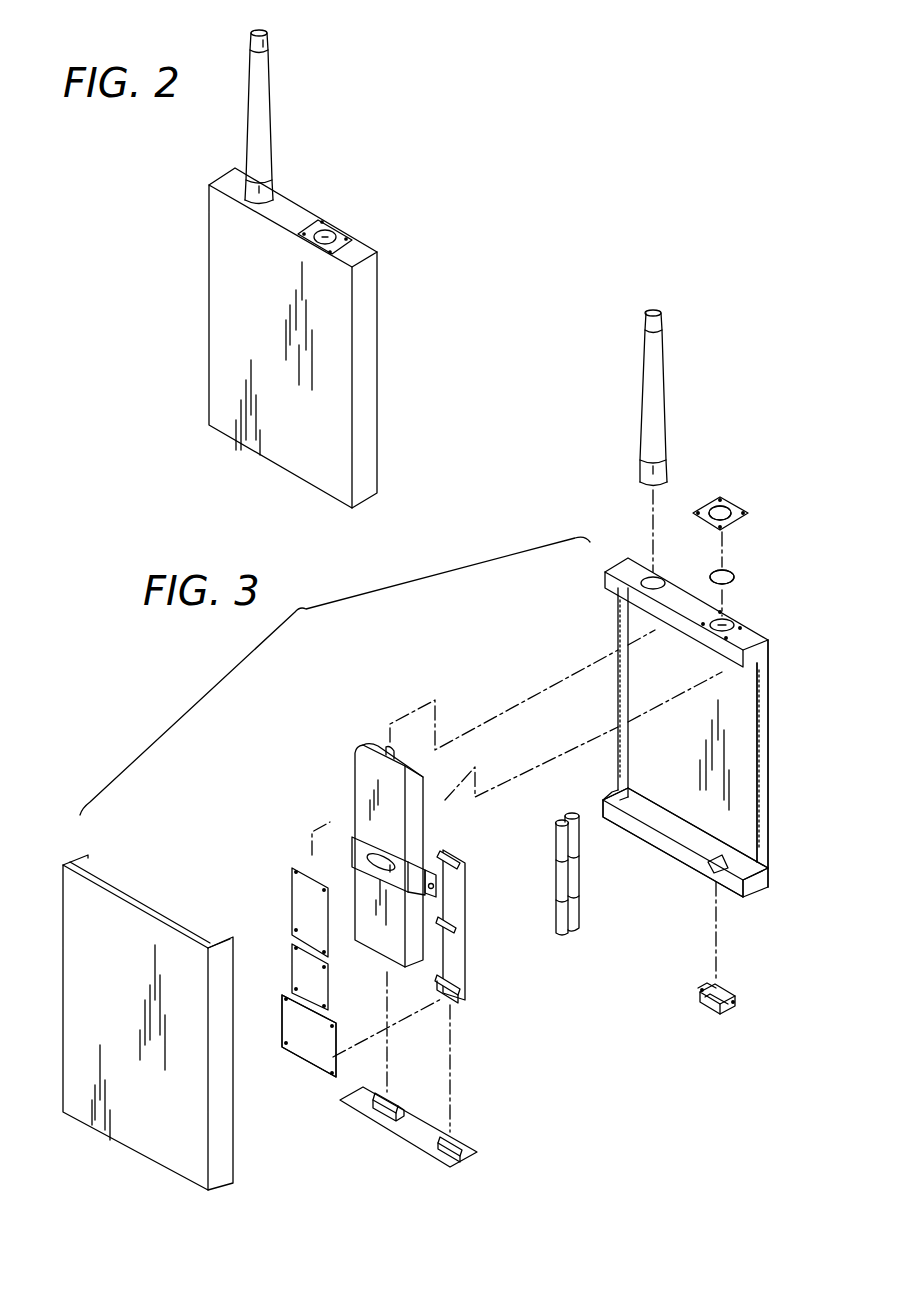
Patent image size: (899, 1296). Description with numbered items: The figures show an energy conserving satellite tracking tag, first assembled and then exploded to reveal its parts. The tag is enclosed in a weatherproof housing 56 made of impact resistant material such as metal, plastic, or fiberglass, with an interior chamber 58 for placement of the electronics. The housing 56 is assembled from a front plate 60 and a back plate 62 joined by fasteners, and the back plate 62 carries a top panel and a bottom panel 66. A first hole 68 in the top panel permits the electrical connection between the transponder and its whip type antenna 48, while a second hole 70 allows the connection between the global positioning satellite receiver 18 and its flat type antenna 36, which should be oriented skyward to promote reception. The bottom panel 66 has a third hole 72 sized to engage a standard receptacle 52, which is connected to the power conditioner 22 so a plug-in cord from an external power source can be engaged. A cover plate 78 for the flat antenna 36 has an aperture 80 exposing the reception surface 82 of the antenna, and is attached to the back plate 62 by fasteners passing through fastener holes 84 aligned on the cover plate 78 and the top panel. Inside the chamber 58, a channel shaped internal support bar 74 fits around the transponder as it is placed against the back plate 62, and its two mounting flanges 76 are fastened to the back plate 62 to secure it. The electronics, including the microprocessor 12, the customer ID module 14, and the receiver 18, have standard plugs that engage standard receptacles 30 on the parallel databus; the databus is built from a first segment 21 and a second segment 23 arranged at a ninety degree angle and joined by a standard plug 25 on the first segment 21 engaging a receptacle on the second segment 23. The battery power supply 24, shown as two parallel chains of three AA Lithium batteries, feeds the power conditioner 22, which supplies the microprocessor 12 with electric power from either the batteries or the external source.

In FIG. 3, the microprocessor 12 is at (300, 1063).
In FIG. 3, the customer ID module 14 is at (293, 969).
In FIG. 3, the global positioning satellite (GPS) receiver 18 is at (292, 894).
In FIG. 3, the first segment 21 is at (410, 1155).
In FIG. 3, the power conditioner 22 is at (309, 1036).
In FIG. 3, the second segment 23 is at (466, 940).
In FIG. 3, the battery power supply 24 is at (580, 925).
In FIG. 3, the standard plug 25 is at (462, 1148).
In FIG. 3, the standard receptacles 30 is at (458, 860).
In FIG. 2, the flat type antenna 36 is at (326, 234).
In FIG. 3, the flat type antenna 36 is at (734, 579).
In FIG. 2, the whip type antenna 48 is at (270, 88).
In FIG. 3, the whip type antenna 48 is at (664, 362).
In FIG. 3, the standard receptacle 52 is at (736, 1004).
In FIG. 2, the weatherproof housing 56 is at (377, 322).
In FIG. 3, the interior chamber 58 is at (748, 796).
In FIG. 3, the front plate 60 is at (62, 898).
In FIG. 3, the back plate 62 is at (768, 705).
In FIG. 3, the bottom panel 66 is at (622, 830).
In FIG. 3, the first hole 68 is at (657, 577).
In FIG. 3, the second hole 70 is at (730, 620).
In FIG. 3, the third hole 72 is at (708, 873).
In FIG. 3, the internal support bar 74 is at (352, 848).
In FIG. 3, the mounting flanges 76 is at (432, 872).
In FIG. 3, the cover plate 78 is at (732, 510).
In FIG. 3, the aperture 80 is at (724, 510).
In FIG. 3, the reception surface 82 is at (728, 572).
In FIG. 3, the fastener holes 84 is at (744, 514).